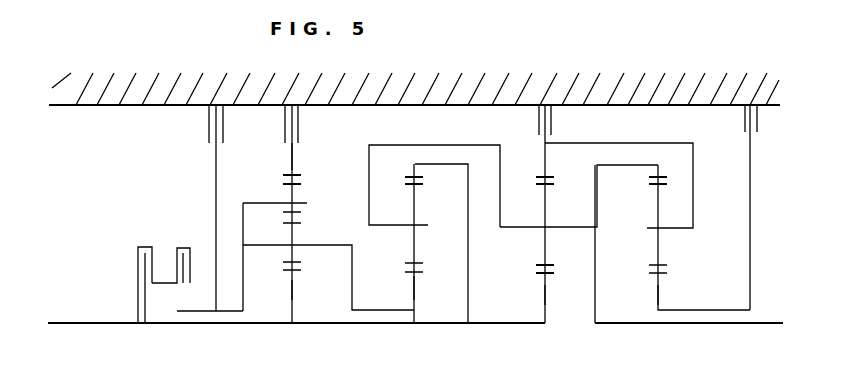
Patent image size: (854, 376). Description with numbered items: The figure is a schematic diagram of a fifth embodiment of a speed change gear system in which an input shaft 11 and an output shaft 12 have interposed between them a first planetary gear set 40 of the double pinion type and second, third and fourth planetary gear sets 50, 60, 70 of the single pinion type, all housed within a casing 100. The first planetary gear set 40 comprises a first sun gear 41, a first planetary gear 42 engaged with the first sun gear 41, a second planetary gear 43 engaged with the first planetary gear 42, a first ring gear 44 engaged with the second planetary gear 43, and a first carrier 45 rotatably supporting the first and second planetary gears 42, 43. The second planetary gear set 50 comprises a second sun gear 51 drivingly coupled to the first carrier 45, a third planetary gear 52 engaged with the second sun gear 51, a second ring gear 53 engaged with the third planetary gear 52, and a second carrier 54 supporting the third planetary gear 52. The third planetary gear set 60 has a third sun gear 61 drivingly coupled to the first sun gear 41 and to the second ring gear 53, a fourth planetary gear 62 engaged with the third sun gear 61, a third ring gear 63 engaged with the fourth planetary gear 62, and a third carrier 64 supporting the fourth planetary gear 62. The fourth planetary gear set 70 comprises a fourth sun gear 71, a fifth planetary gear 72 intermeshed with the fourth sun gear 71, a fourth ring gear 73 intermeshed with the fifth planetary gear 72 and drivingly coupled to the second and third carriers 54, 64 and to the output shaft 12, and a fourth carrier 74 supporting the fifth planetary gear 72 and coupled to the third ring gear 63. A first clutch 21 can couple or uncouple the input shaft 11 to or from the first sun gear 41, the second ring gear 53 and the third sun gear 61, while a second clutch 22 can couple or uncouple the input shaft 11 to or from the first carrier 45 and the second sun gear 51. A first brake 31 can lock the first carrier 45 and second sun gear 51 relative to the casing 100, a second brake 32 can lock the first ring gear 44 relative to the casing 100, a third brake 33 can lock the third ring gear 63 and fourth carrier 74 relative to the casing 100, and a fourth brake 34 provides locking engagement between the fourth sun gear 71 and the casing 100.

The casing 100 is at (463, 86).
The input shaft 11 is at (94, 325).
The output shaft 12 is at (696, 325).
The first clutch 21 is at (145, 243).
The second clutch 22 is at (183, 246).
The first brake 31 is at (207, 123).
The second brake 32 is at (283, 120).
The third brake 33 is at (554, 122).
The fourth brake 34 is at (759, 122).
The first planetary gear set 40 is at (295, 294).
The first sun gear 41 is at (289, 288).
The first planetary gear 42 is at (292, 252).
The second planetary gear 43 is at (292, 208).
The first ring gear 44 is at (294, 155).
The first carrier 45 is at (273, 185).
The second planetary gear set 50 is at (418, 301).
The second sun gear 51 is at (416, 279).
The third planetary gear 52 is at (417, 243).
The second ring gear 53 is at (416, 171).
The second carrier 54 is at (434, 186).
The third planetary gear set 60 is at (549, 302).
The third sun gear 61 is at (547, 293).
The fourth planetary gear 62 is at (547, 243).
The third ring gear 63 is at (547, 160).
The third carrier 64 is at (579, 196).
The fourth planetary gear set 70 is at (654, 290).
The fourth sun gear 71 is at (659, 292).
The fifth planetary gear 72 is at (660, 243).
The fourth ring gear 73 is at (666, 172).
The fourth carrier 74 is at (619, 185).